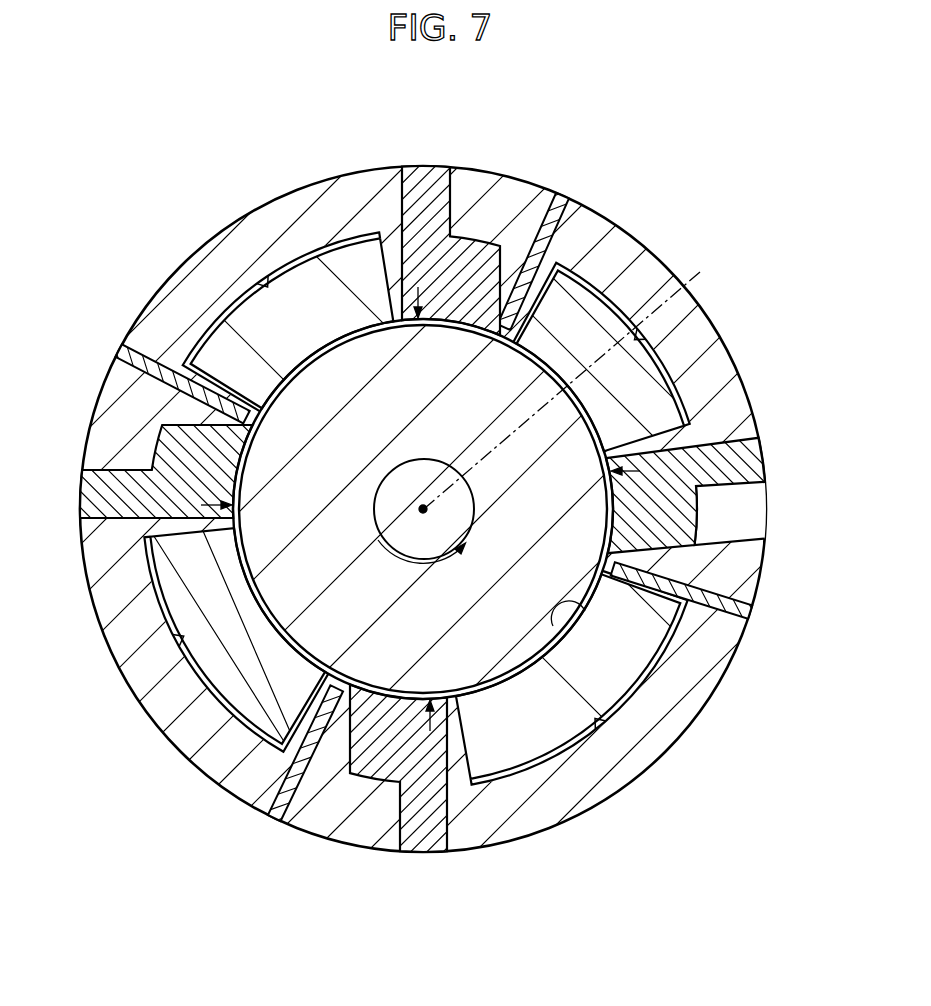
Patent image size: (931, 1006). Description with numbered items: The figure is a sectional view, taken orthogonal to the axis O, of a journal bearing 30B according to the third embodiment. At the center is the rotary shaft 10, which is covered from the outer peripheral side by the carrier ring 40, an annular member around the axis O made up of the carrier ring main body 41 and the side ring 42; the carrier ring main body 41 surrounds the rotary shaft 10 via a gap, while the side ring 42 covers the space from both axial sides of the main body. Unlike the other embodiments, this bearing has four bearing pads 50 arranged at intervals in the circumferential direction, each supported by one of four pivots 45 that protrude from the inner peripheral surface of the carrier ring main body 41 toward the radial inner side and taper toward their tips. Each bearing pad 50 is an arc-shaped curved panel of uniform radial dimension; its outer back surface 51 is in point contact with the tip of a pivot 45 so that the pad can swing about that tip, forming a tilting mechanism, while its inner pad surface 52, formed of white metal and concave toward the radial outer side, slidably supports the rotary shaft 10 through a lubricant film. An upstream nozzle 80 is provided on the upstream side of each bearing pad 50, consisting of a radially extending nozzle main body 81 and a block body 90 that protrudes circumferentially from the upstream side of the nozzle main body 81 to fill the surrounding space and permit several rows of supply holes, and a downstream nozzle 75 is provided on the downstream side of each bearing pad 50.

The journal bearing 30B is at (116, 212).
The rotary shaft 10 is at (363, 360).
The carrier ring 40 is at (774, 518).
The carrier ring main body 41 is at (745, 542).
The side ring 42 is at (695, 564).
The pivot 45 is at (262, 278).
The bearing pad 50 is at (337, 263).
The back surface 51 is at (510, 770).
The pad surface 52 is at (585, 611).
The downstream nozzle 75 is at (580, 215).
The upstream nozzle 80 is at (424, 158).
The nozzle main body 81 is at (446, 788).
The block body 90 is at (387, 778).
The axis O is at (575, 377).